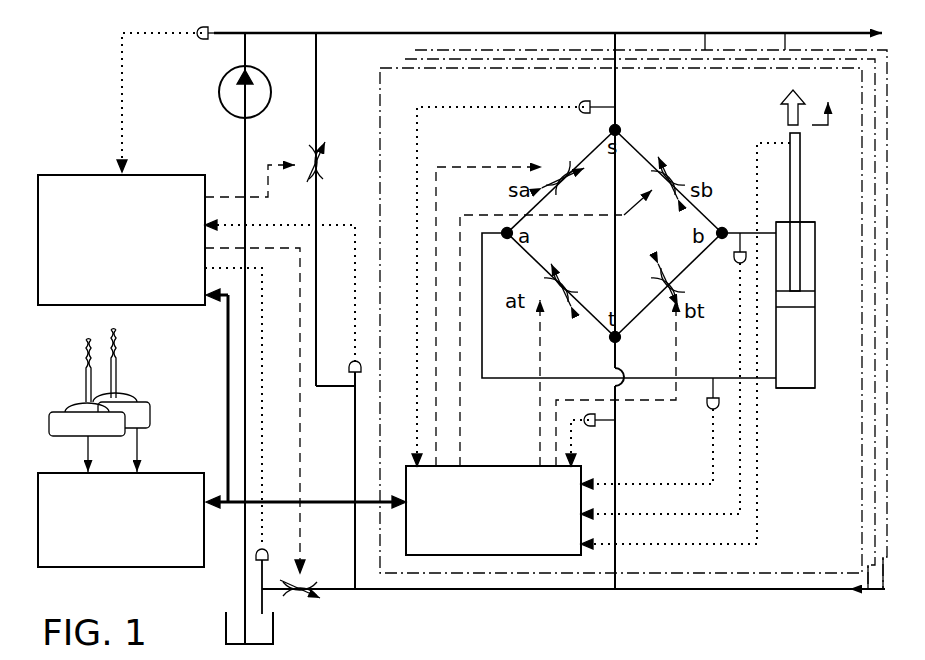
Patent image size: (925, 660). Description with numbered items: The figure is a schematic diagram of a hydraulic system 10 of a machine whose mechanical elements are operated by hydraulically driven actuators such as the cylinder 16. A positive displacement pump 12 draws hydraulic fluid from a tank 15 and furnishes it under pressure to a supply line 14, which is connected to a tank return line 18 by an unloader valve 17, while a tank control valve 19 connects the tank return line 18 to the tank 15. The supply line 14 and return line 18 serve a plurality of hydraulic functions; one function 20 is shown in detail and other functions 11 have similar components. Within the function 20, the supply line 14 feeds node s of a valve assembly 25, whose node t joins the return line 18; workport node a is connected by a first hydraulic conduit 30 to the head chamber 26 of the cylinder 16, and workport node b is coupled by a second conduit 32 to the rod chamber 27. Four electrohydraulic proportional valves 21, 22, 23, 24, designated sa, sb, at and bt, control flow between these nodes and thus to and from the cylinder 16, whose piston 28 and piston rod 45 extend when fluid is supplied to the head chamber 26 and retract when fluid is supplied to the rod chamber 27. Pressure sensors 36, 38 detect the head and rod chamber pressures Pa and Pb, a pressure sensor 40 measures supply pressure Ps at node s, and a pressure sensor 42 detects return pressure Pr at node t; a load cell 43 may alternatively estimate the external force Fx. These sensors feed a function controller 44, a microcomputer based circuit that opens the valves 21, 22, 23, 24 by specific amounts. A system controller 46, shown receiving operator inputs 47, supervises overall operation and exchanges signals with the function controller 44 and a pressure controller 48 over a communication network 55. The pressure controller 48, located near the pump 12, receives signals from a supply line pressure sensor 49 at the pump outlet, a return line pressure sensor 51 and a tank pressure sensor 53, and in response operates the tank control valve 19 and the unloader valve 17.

The hydraulic system 10 is at (93, 80).
The other functions 11 is at (400, 55).
The positive displacement pump 12 is at (220, 100).
The supply line 14 is at (513, 33).
The tank 15 is at (226, 632).
The cylinder 16 is at (820, 375).
The unloader valve 17 is at (306, 152).
The tank return line 18 is at (598, 592).
The tank control valve 19 is at (320, 610).
The function 20 is at (378, 125).
The first electrohydraulic proportional valve 21 is at (548, 160).
The second electrohydraulic proportional valve 22 is at (682, 172).
The third electrohydraulic proportional valve 23 is at (580, 282).
The fourth electrohydraulic proportional valve 24 is at (668, 280).
The valve assembly 25 is at (642, 138).
The head chamber 26 is at (800, 380).
The rod chamber 27 is at (808, 275).
The piston 28 is at (815, 298).
The first hydraulic conduit 30 is at (482, 312).
The second conduit 32 is at (737, 232).
The pressure sensor 36 is at (713, 410).
The pressure sensor 38 is at (737, 266).
The pressure sensor 40 is at (584, 102).
The pressure sensor 42 is at (606, 420).
The load cell 43 is at (802, 140).
The function controller 44 is at (480, 550).
The piston rod 45 is at (800, 185).
The system controller 46 is at (108, 560).
The joysticks 47 is at (128, 392).
The pressure controller 48 is at (108, 280).
The supply line pressure sensor 49 is at (208, 42).
The return line pressure sensor 51 is at (350, 362).
The tank pressure sensor 53 is at (268, 570).
The communication network 55 is at (345, 500).